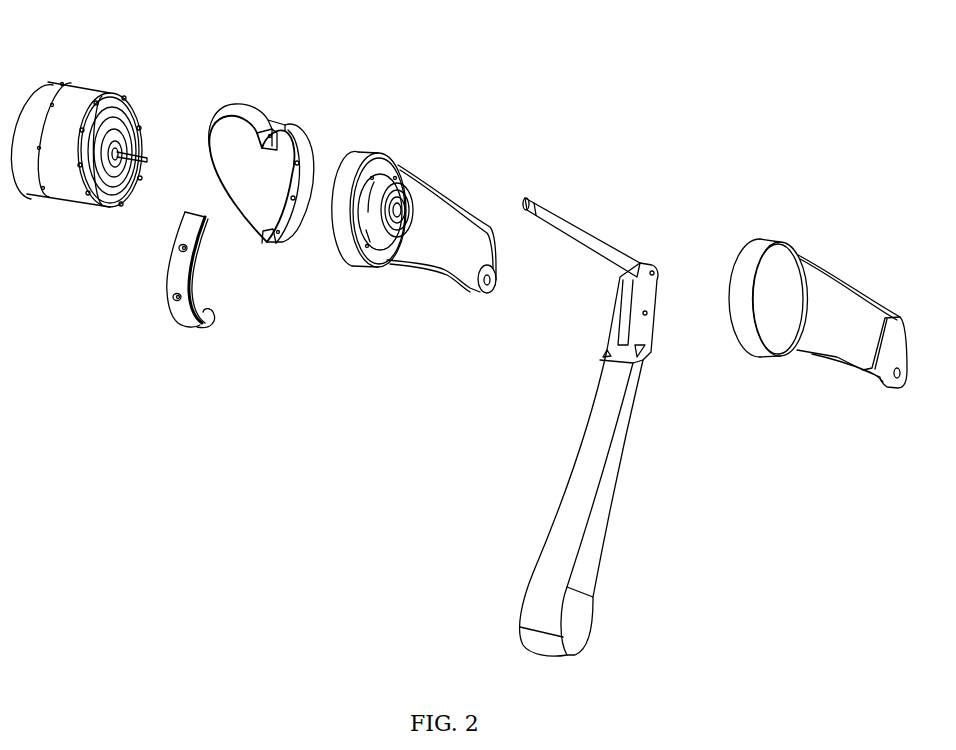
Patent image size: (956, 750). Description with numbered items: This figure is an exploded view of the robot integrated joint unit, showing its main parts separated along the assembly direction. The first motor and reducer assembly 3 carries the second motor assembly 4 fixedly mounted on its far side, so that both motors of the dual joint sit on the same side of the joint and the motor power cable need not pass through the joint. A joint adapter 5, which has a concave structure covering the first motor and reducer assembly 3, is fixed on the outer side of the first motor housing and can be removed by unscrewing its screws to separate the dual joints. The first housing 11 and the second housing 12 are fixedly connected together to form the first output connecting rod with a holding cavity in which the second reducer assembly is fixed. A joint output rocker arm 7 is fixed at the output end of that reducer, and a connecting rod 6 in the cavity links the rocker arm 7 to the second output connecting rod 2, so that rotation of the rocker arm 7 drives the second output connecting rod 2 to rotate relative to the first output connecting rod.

The second output connecting rod 2 is at (610, 458).
The first motor and reducer assembly 3 is at (94, 109).
The second motor assembly 4 is at (60, 80).
The joint adapter 5 is at (287, 127).
The connecting rod 6 is at (593, 238).
The joint output rocker arm 7 is at (397, 160).
The first housing 11 is at (837, 287).
The second housing 12 is at (440, 197).